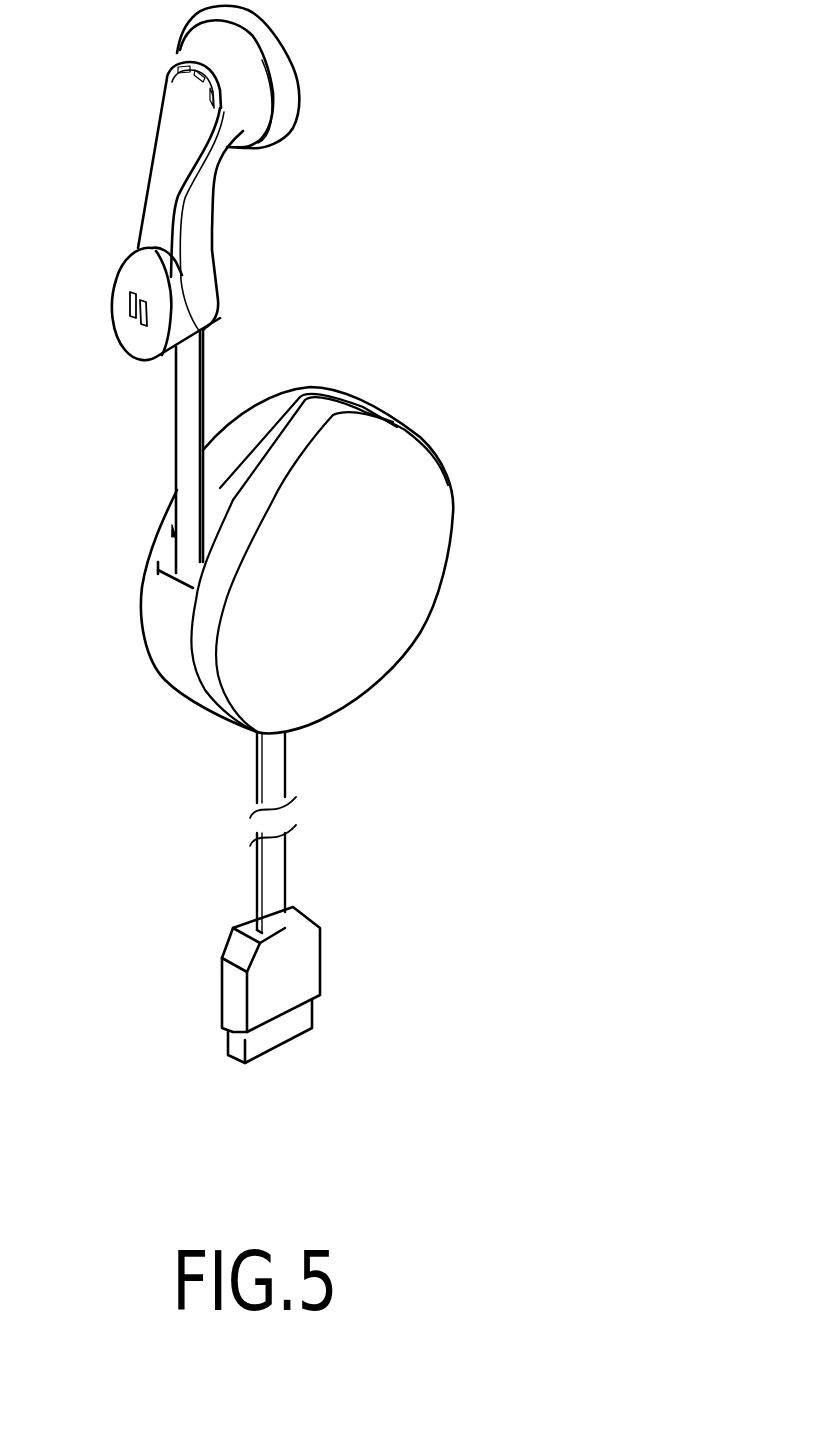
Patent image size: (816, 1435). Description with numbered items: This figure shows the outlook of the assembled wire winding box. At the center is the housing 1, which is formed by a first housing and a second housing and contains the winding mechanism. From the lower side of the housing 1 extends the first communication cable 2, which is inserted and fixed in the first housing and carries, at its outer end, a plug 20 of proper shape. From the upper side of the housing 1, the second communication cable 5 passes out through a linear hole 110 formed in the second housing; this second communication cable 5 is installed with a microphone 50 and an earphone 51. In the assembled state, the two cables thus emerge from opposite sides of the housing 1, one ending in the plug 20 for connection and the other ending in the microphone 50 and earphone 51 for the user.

The housing 1 is at (400, 613).
The first communication cable 2 is at (273, 863).
The second communication cable 5 is at (183, 417).
The plug 20 is at (305, 950).
The microphone 50 is at (130, 277).
The earphone 51 is at (280, 68).
The linear hole 110 is at (167, 558).